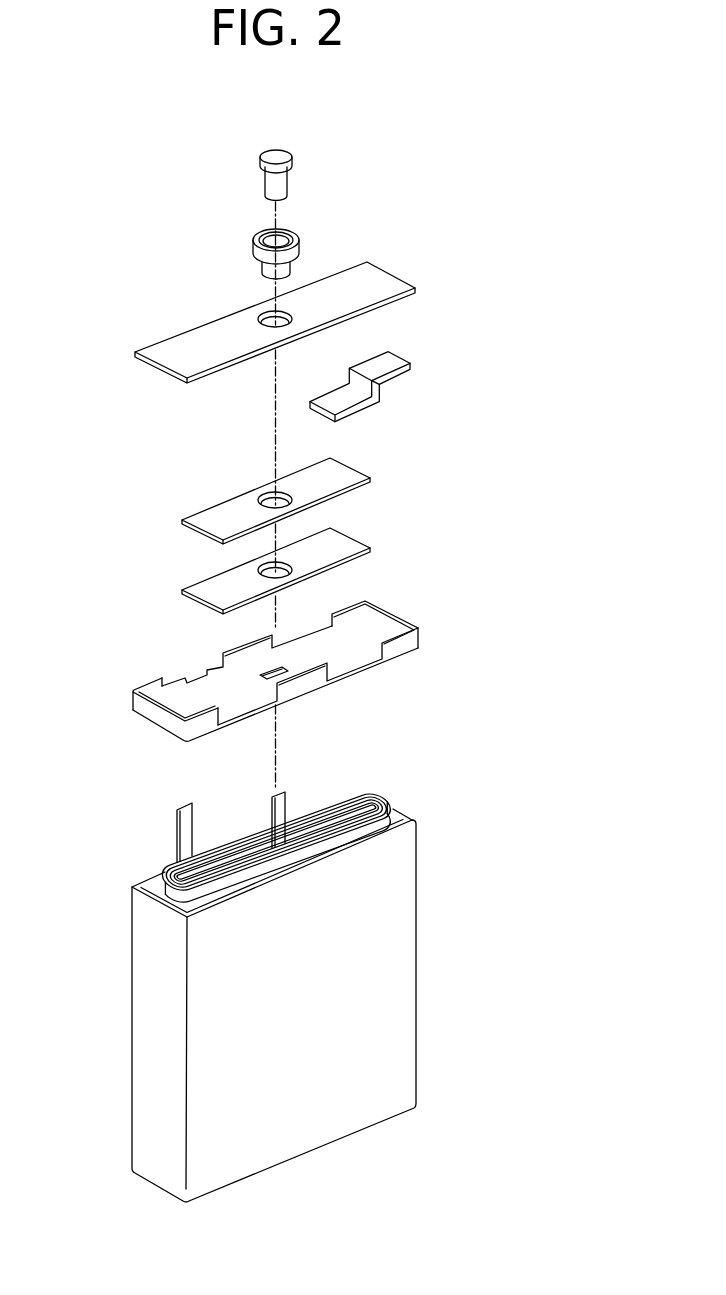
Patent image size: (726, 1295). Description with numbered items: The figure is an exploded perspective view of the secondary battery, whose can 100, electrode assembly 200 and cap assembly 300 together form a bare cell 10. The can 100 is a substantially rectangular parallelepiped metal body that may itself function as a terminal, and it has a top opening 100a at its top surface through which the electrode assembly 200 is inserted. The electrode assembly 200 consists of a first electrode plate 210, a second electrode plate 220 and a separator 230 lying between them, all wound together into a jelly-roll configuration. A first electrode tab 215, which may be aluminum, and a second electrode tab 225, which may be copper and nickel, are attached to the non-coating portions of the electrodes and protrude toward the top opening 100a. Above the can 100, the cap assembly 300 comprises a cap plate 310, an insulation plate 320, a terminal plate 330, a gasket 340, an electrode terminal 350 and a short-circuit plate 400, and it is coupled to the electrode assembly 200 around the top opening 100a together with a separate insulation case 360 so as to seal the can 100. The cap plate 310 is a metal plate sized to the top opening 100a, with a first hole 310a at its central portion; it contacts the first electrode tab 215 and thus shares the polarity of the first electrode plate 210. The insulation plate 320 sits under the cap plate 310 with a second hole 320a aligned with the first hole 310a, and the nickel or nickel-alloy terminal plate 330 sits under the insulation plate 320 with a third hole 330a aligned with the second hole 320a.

The bare cell 10 is at (92, 125).
The can 100 is at (312, 1000).
The top opening 100a is at (405, 820).
The electrode assembly 200 is at (278, 815).
The first electrode plate 210 is at (277, 842).
The second electrode plate 220 is at (277, 842).
The separator 230 is at (276, 842).
The first electrode tab 215 is at (182, 825).
The second electrode tab 225 is at (275, 807).
The cap assembly 300 is at (418, 239).
The cap plate 310 is at (173, 343).
The first hole 310a is at (262, 317).
The insulation plate 320 is at (353, 473).
The second hole 320a is at (262, 497).
The terminal plate 330 is at (350, 540).
The third hole 330a is at (262, 568).
The gasket 340 is at (253, 235).
The electrode terminal 350 is at (272, 152).
The insulation case 360 is at (153, 718).
The short-circuit plate 400 is at (398, 358).